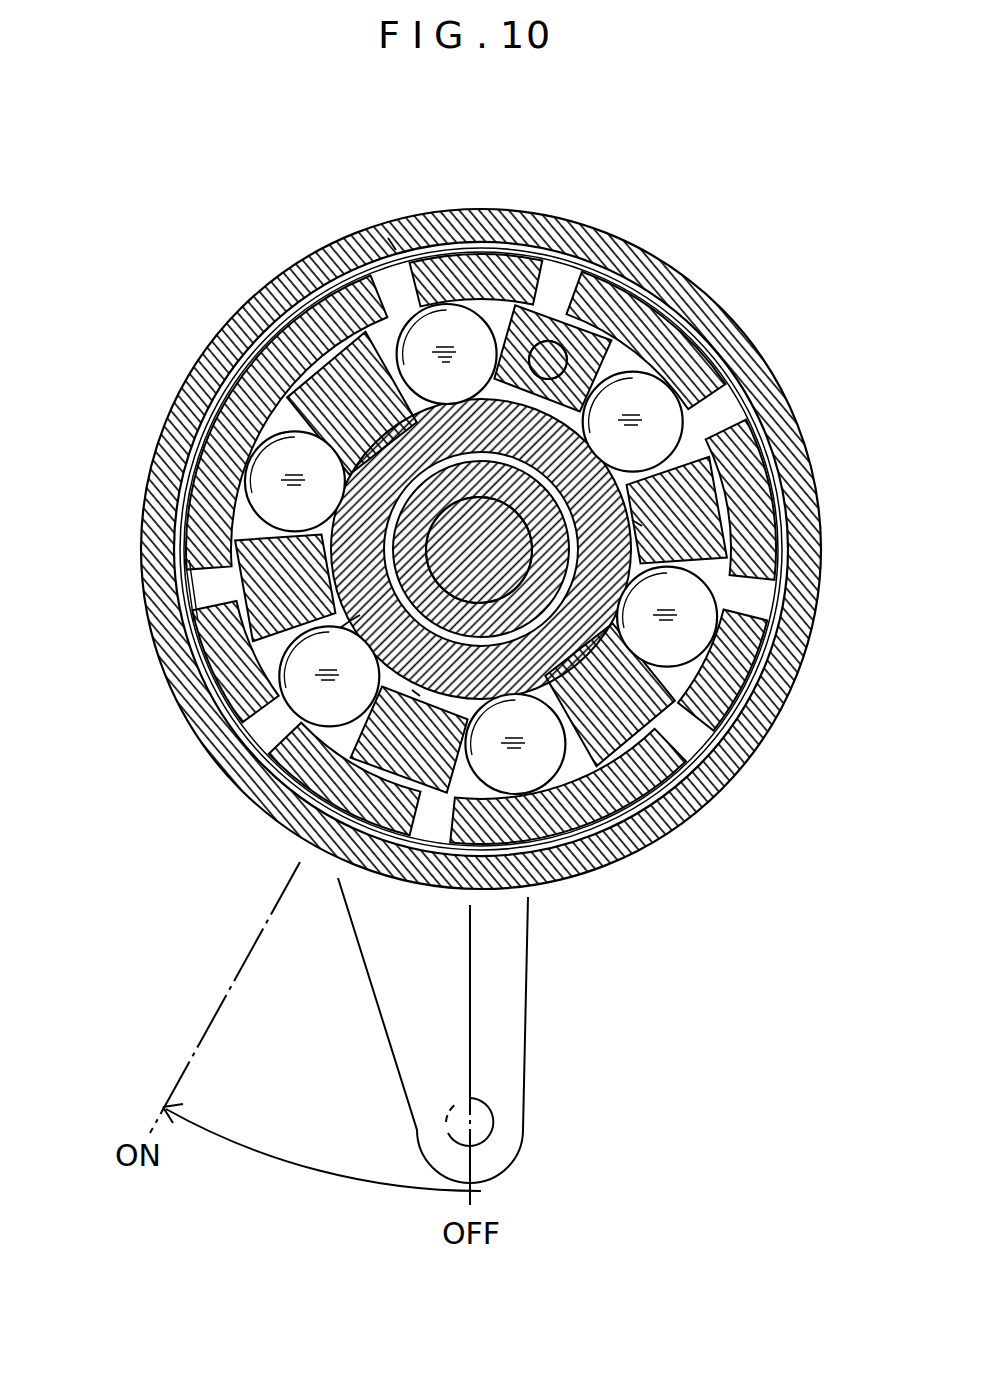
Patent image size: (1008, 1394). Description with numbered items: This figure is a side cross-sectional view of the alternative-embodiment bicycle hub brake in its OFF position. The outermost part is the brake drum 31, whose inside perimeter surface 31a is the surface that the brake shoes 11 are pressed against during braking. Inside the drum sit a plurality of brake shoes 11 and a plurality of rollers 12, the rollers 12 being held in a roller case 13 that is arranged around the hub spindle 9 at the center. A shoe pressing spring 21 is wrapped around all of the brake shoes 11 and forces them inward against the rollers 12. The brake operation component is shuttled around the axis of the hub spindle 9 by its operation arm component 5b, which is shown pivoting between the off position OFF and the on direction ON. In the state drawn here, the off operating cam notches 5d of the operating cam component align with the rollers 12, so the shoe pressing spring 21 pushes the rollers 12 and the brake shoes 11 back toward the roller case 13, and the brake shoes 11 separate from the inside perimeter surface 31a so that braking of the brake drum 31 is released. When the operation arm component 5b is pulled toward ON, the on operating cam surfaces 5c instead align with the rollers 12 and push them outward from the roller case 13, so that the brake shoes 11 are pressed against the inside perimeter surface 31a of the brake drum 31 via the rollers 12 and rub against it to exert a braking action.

The operation arm component 5b is at (525, 1085).
The on operating cam surfaces 5c is at (393, 243).
The off operating cam notches 5d is at (334, 483).
The hub spindle 9 is at (347, 632).
The brake shoes 11 is at (305, 318).
The rollers 12 is at (466, 300).
The roller case 13 is at (760, 543).
The shoe pressing spring 21 is at (200, 603).
The brake drum 31 is at (246, 315).
The inside perimeter surface 31a is at (205, 440).